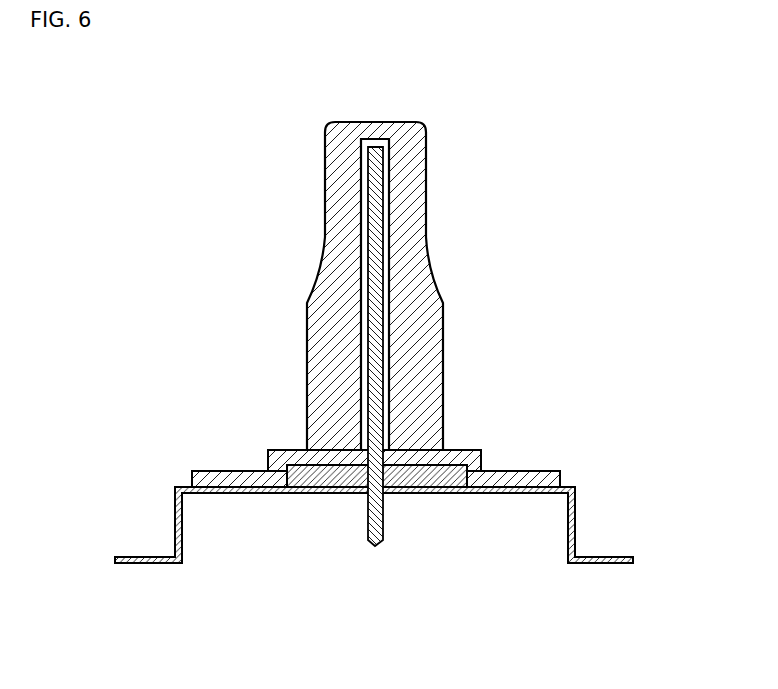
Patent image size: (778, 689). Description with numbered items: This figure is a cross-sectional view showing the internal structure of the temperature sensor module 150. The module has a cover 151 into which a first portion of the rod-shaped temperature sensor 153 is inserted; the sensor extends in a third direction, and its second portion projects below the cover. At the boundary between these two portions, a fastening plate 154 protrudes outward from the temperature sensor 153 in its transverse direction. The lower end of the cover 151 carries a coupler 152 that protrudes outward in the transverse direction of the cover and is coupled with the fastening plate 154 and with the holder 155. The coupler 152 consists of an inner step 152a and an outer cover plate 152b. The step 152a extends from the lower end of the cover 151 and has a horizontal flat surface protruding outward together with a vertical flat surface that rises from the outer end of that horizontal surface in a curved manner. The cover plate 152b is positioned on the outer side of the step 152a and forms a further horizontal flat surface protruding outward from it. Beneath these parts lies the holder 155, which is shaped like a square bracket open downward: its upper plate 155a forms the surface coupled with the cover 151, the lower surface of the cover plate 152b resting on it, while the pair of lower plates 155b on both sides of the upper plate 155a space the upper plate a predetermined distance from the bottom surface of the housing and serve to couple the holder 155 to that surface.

The temperature sensor module 150 is at (486, 89).
The cover 151 is at (413, 187).
The coupler 152 is at (653, 388).
The step 152a is at (460, 458).
The cover plate 152b is at (522, 471).
The temperature sensor 153 is at (383, 288).
The fastening plate 154 is at (308, 473).
The holder 155 is at (605, 645).
The upper plate 155a is at (337, 493).
The lower plates 155b is at (150, 565).